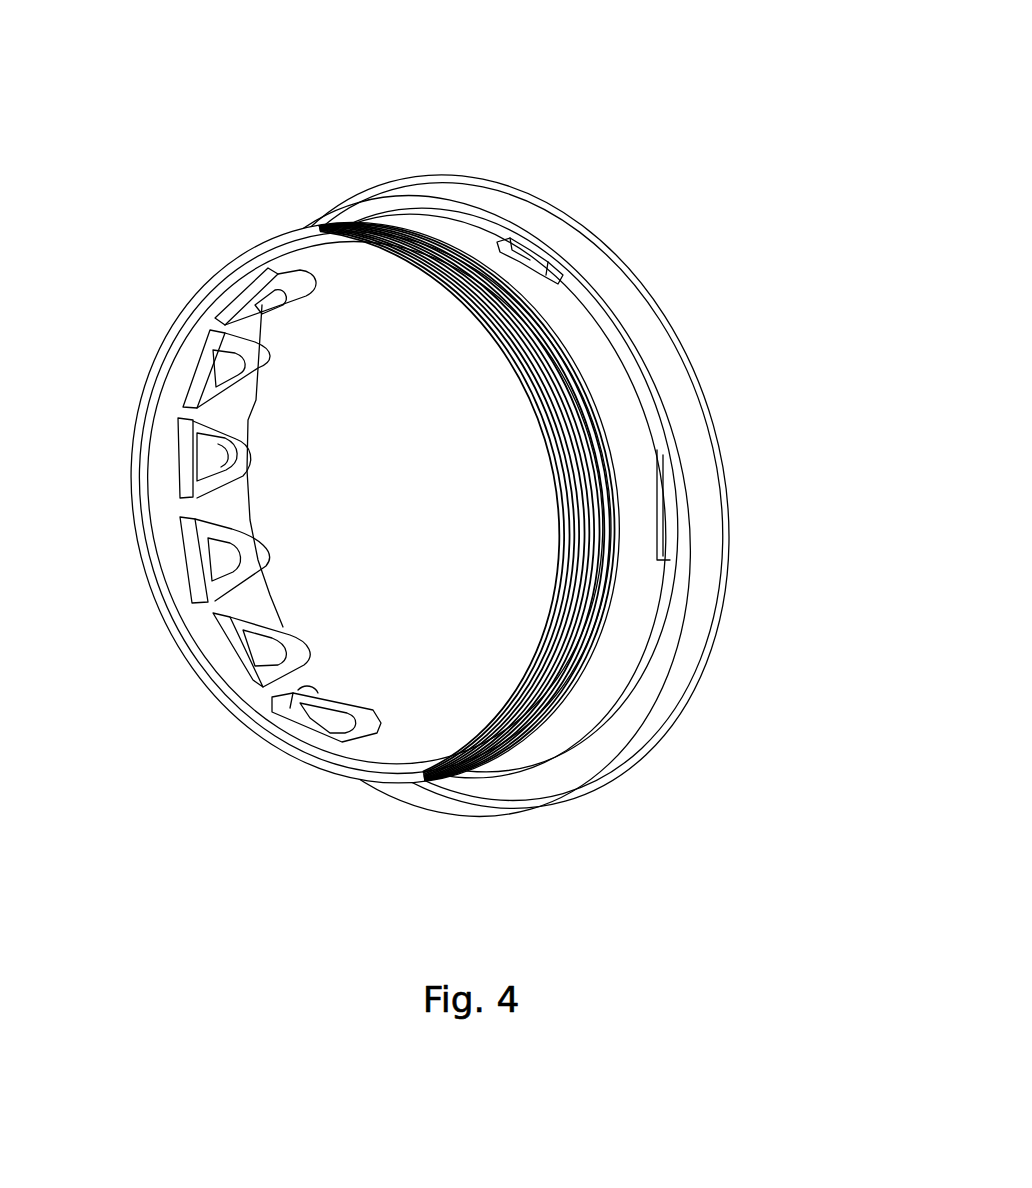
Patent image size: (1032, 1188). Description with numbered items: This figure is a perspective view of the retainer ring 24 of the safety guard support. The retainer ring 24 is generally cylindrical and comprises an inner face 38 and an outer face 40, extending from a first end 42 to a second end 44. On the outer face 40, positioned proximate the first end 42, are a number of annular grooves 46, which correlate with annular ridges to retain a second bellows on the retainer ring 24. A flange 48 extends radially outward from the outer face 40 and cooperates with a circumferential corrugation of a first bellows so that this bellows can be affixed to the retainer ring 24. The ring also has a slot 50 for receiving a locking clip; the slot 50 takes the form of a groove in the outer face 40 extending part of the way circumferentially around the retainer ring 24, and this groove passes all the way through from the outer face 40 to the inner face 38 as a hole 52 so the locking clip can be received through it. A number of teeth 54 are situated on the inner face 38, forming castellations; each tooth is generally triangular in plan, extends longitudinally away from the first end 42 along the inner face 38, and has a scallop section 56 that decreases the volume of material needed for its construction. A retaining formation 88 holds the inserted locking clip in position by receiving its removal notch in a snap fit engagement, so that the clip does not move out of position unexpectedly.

The retainer ring 24 is at (543, 163).
The inner face 38 is at (312, 593).
The outer face 40 is at (672, 441).
The first end 42 is at (141, 359).
The second end 44 is at (735, 537).
The annular grooves 46 is at (602, 415).
The flange 48 is at (567, 233).
The slot 50 is at (605, 331).
The hole 52 is at (235, 415).
The teeth 54 is at (290, 696).
The scallop section 56 is at (229, 561).
The retaining formation 88 is at (559, 273).